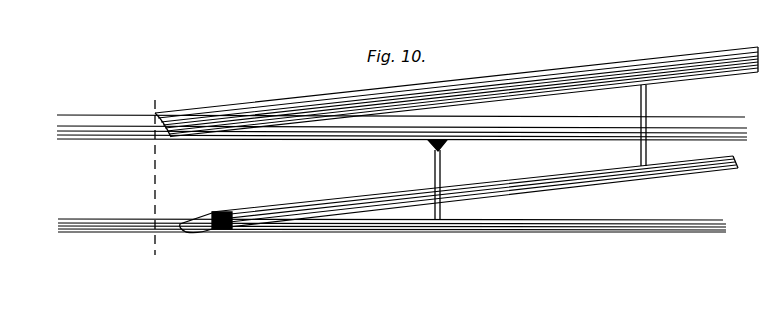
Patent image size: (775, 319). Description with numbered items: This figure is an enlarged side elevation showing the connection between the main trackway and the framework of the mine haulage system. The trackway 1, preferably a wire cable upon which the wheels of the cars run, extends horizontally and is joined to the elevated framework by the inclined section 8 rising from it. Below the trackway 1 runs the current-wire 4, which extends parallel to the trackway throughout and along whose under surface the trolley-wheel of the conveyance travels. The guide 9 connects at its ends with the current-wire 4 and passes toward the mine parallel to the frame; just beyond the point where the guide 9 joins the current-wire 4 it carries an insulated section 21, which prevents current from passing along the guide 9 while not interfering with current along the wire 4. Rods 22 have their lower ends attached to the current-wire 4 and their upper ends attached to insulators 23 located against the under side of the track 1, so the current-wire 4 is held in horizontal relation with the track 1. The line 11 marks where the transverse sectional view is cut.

The trackway 1 is at (590, 117).
The current-wire 4 is at (604, 232).
The inclined section 8 is at (640, 61).
The guide 9 is at (673, 176).
The inclined section 11 is at (159, 177).
The insulated section 21 is at (225, 232).
The rod 22 is at (440, 167).
The insulator 23 is at (428, 143).